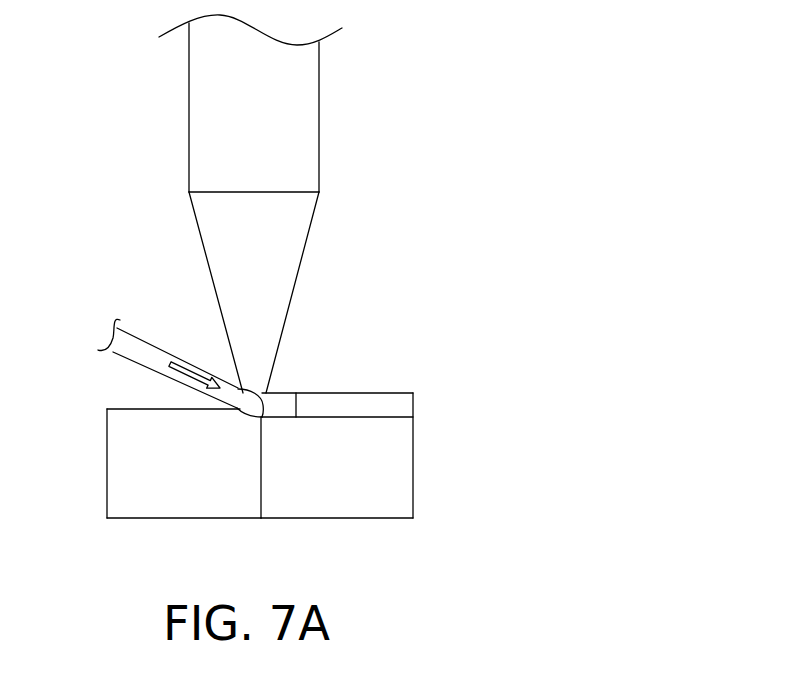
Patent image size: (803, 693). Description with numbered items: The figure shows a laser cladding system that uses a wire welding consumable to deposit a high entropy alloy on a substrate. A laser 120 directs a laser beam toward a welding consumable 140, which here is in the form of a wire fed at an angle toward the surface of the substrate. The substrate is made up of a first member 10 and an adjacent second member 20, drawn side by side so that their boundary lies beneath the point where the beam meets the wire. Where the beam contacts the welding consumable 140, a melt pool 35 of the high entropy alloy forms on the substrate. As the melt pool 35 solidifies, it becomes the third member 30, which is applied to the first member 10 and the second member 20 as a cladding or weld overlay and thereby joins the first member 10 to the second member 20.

The laser 120 is at (283, 143).
The welding consumable 140 is at (158, 355).
The third member 30 is at (356, 402).
The first member 10 is at (172, 495).
The second member 20 is at (395, 482).
The melt pool 35 is at (268, 406).